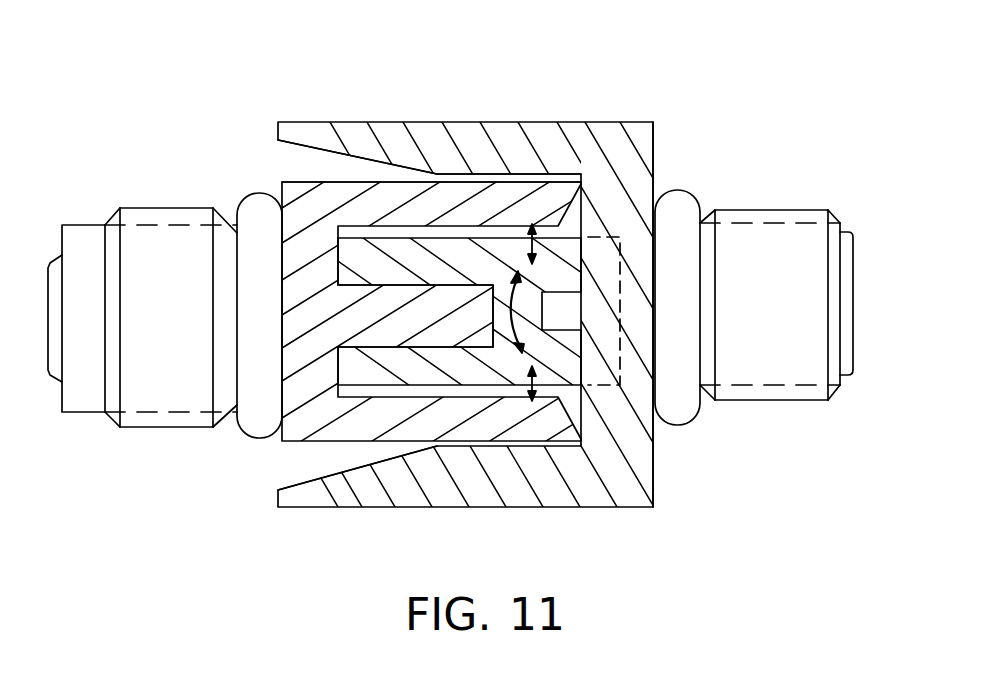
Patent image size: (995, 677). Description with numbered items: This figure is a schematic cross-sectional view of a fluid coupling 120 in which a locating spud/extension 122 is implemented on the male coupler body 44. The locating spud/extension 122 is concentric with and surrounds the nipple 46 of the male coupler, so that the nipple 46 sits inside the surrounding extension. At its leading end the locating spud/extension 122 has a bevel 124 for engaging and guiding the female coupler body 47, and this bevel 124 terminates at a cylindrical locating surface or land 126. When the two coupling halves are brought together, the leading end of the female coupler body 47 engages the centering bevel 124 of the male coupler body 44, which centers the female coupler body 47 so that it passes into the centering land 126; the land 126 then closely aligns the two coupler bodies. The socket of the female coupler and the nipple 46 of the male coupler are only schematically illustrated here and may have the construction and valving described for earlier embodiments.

The fluid coupling 120 is at (268, 97).
The locating spud/extension 122 is at (488, 122).
The bevel 124 is at (313, 148).
The cylindrical locating surface or land 126 is at (498, 178).
The male coupler body 44 is at (653, 458).
The nipple 46 is at (420, 427).
The female coupler body 47 is at (303, 440).